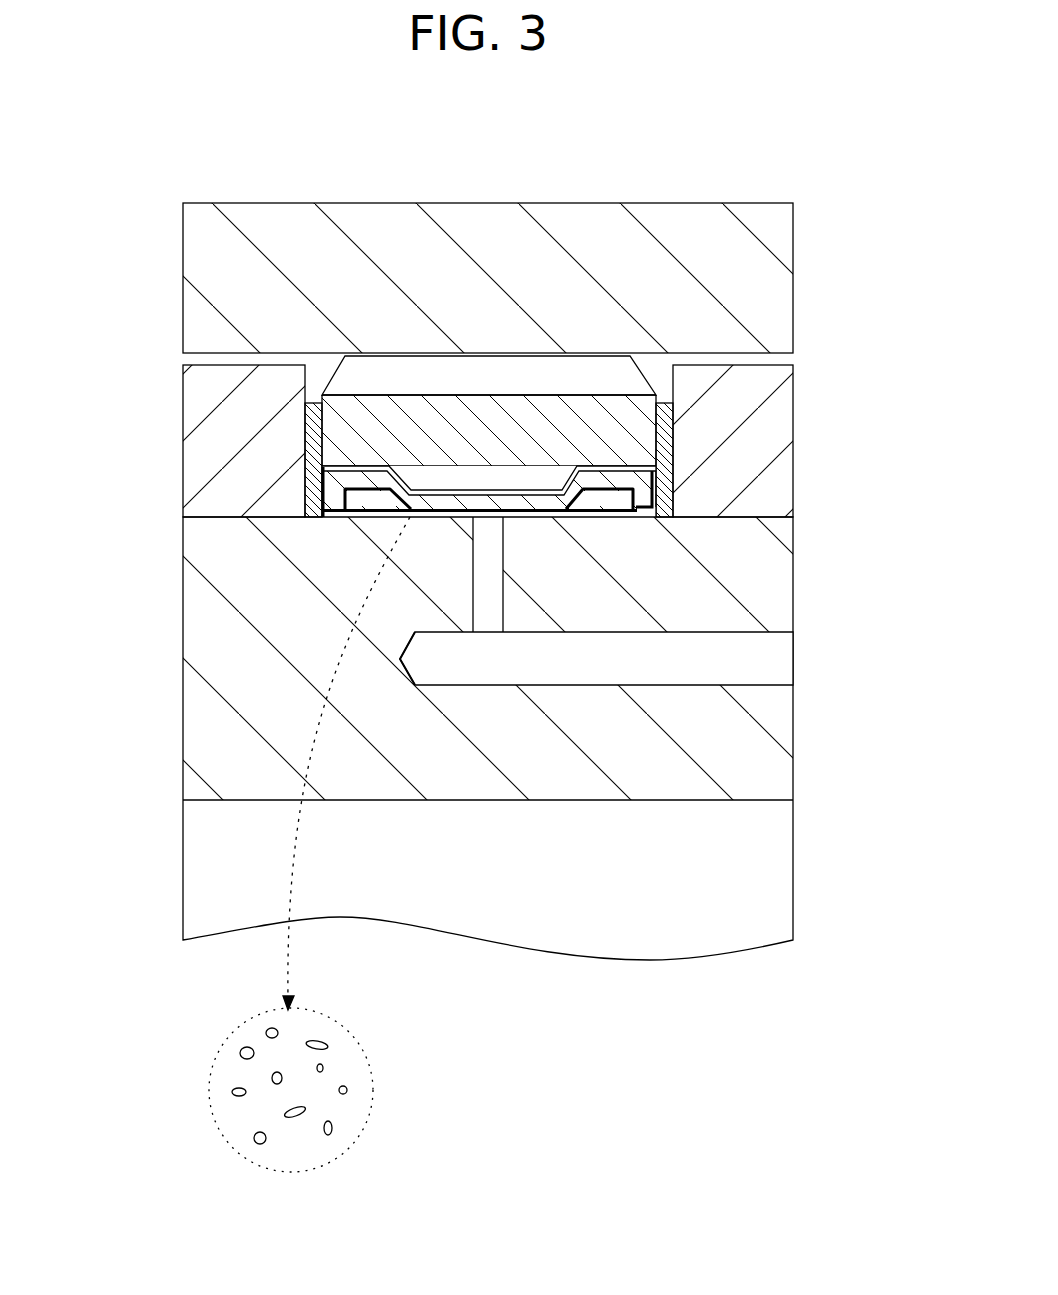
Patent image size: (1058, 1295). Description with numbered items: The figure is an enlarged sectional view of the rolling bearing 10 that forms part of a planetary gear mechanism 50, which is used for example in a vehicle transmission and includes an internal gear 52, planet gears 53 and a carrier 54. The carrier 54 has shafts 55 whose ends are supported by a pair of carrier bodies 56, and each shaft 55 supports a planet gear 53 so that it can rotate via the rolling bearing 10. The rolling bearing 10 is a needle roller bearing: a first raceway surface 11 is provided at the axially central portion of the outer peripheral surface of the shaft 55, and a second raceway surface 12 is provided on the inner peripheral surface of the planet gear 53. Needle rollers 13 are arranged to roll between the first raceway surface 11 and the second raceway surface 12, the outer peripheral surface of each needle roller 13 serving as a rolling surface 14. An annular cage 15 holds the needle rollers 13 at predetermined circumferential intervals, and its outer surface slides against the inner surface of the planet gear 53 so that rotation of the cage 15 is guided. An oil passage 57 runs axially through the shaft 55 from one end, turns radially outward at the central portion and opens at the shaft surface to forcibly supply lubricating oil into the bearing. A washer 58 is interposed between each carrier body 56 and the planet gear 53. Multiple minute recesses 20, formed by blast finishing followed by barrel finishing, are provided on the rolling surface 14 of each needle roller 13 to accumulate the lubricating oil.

The rolling bearing 10 is at (427, 466).
The first raceway surface 11 is at (604, 514).
The second raceway surface 12 is at (505, 480).
The needle roller 13 is at (563, 468).
The rolling surface 14 is at (534, 480).
The cage 15 is at (472, 500).
The minute recesses 20 is at (240, 1053).
The planetary gear mechanism 50 is at (128, 384).
The internal gear 52 is at (726, 226).
The planet gear 53 is at (645, 363).
The carrier 54 is at (794, 595).
The shaft 55 is at (205, 635).
The carrier body 56 is at (200, 410).
The oil passage 57 is at (750, 634).
The washer 58 is at (308, 463).